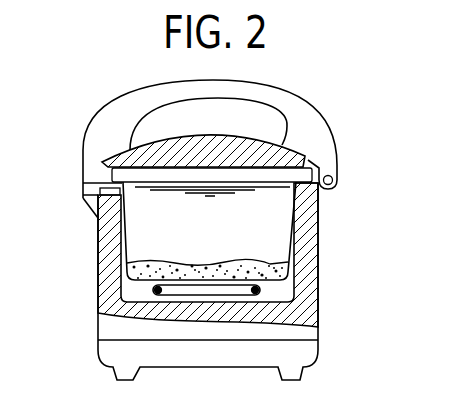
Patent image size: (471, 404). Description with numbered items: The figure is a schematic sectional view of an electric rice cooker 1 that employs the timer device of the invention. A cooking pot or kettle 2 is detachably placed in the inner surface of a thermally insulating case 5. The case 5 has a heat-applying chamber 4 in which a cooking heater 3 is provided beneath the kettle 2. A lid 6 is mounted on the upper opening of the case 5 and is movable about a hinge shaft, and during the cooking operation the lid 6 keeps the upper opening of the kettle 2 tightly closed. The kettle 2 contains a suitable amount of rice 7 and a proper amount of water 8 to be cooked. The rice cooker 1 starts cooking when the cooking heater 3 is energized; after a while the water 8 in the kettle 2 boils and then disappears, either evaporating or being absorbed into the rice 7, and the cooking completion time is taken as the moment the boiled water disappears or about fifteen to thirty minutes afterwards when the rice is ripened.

The electric rice cooker 1 is at (342, 222).
The cooking pot or kettle 2 is at (297, 272).
The cooking heater 3 is at (153, 290).
The heat-applying chamber 4 is at (310, 302).
The thermally insulating case 5 is at (98, 257).
The lid 6 is at (208, 135).
The rice 7 is at (208, 262).
The water 8 is at (247, 193).